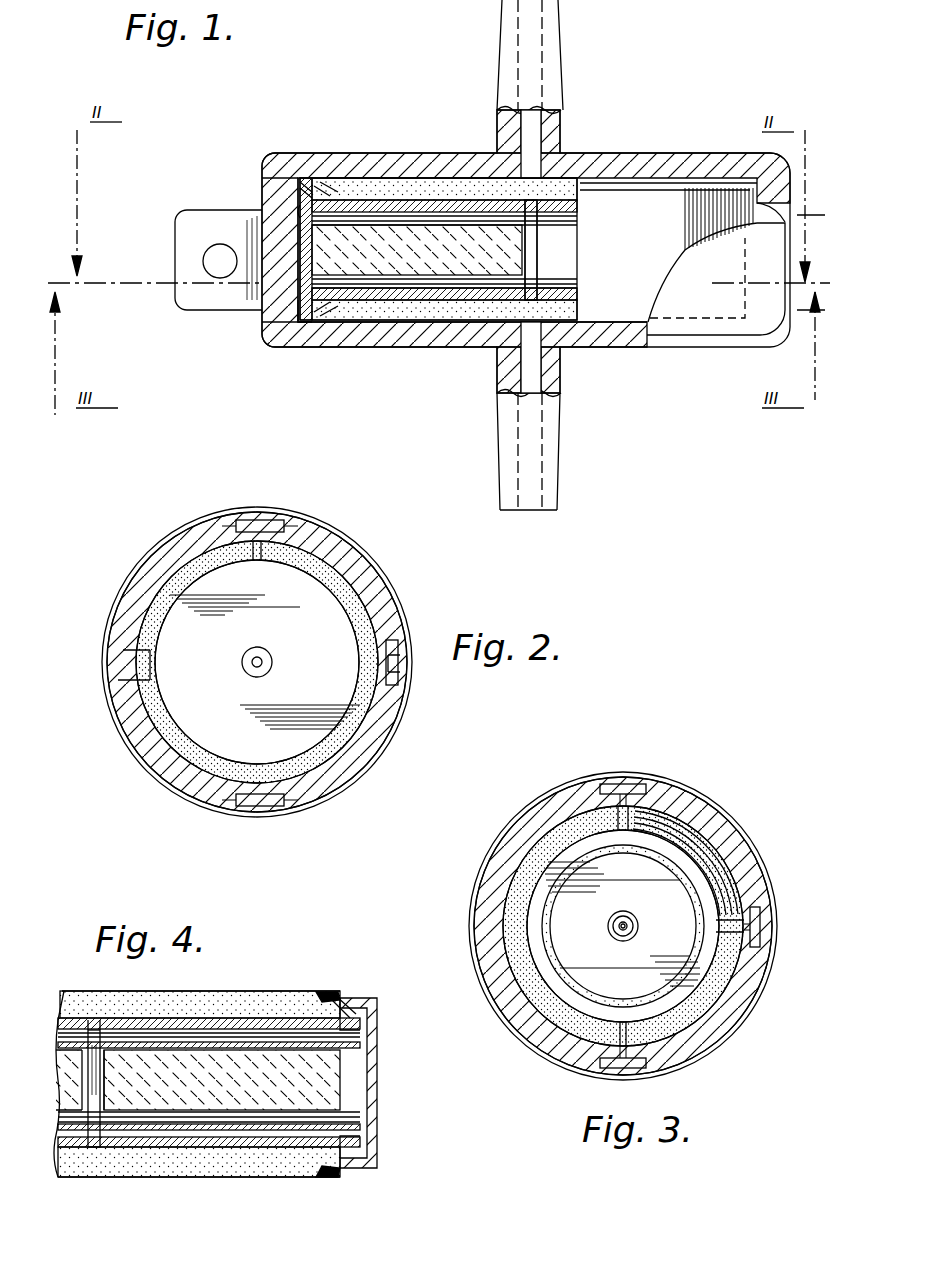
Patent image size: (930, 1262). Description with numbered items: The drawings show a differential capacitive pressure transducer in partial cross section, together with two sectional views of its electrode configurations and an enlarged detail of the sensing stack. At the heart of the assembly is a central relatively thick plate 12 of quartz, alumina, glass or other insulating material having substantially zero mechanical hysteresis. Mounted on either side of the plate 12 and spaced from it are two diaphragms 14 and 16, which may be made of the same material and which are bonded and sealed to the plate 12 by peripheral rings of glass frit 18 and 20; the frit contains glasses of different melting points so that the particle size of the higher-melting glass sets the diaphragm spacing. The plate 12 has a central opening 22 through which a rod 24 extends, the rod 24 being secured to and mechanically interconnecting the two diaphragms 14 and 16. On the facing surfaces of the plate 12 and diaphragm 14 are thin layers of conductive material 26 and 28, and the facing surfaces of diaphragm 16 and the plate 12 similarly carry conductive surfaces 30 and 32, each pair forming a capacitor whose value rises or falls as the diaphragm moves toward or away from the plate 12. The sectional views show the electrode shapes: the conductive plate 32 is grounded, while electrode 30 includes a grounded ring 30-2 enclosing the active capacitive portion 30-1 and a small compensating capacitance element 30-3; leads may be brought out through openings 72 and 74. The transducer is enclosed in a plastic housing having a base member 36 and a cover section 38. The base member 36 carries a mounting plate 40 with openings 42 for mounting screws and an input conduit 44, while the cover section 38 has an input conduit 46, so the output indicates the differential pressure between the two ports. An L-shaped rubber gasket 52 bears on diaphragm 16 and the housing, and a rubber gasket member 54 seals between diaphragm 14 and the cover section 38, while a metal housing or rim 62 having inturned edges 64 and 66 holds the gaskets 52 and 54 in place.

In FIG. 4, the central plate 12 is at (310, 1086).
In FIG. 1, the diaphragm 14 is at (562, 178).
In FIG. 4, the diaphragm 14 is at (140, 1020).
In FIG. 1, the diaphragm 16 is at (572, 347).
In FIG. 4, the diaphragm 16 is at (123, 1178).
In FIG. 1, the peripheral ring of glass frit 18 is at (300, 216).
In FIG. 4, the peripheral ring of glass frit 18 is at (367, 1032).
In FIG. 1, the peripheral ring of glass frit 20 is at (305, 290).
In FIG. 2, the peripheral ring of glass frit 20 is at (380, 598).
In FIG. 3, the peripheral ring of glass frit 20 is at (728, 836).
In FIG. 4, the peripheral ring of glass frit 20 is at (358, 1126).
In FIG. 1, the central opening 22 is at (538, 241).
In FIG. 3, the central opening 22 is at (608, 925).
In FIG. 4, the central opening 22 is at (68, 1178).
In FIG. 1, the rod 24 is at (538, 266).
In FIG. 2, the rod 24 is at (273, 663).
In FIG. 3, the rod 24 is at (634, 920).
In FIG. 4, the rod 24 is at (94, 1028).
In FIG. 1, the thin layer of conductive material 26 is at (465, 186).
In FIG. 4, the thin layer of conductive material 26 is at (270, 1040).
In FIG. 1, the thin layer of conductive material 28 is at (405, 178).
In FIG. 4, the thin layer of conductive material 28 is at (191, 1028).
In FIG. 1, the conductive surface 30 is at (406, 350).
In FIG. 4, the conductive surface 30 is at (192, 1178).
In FIG. 3, the active capacitive portion 30-1 is at (598, 998).
In FIG. 3, the grounded ring 30-2 is at (527, 893).
In FIG. 3, the small capacitance element 30-3 is at (680, 832).
In FIG. 1, the conductive surface 32 is at (466, 310).
In FIG. 2, the conductive surface 32 is at (192, 690).
In FIG. 4, the conductive surface 32 is at (258, 1178).
In FIG. 1, the base member 36 is at (645, 348).
In FIG. 1, the cover section 38 is at (684, 165).
In FIG. 1, the mounting plate 40 is at (188, 243).
In FIG. 1, the opening 42 is at (220, 268).
In FIG. 1, the input conduit 44 is at (560, 482).
In FIG. 1, the input conduit 46 is at (560, 30).
In FIG. 1, the rubber gasket 52 is at (352, 322).
In FIG. 4, the rubber gasket 52 is at (318, 1182).
In FIG. 1, the rubber gasket member 54 is at (354, 178).
In FIG. 4, the rubber gasket member 54 is at (320, 993).
In FIG. 1, the metal housing or rim 62 is at (275, 278).
In FIG. 2, the metal housing or rim 62 is at (118, 590).
In FIG. 3, the metal housing or rim 62 is at (736, 1032).
In FIG. 4, the metal housing or rim 62 is at (378, 1050).
In FIG. 1, the inturned edge 64 is at (307, 350).
In FIG. 4, the inturned edge 64 is at (368, 1172).
In FIG. 1, the inturned edge 66 is at (304, 176).
In FIG. 4, the inturned edge 66 is at (358, 1000).
In FIG. 2, the opening 72 is at (268, 520).
In FIG. 3, the opening 74 is at (606, 774).